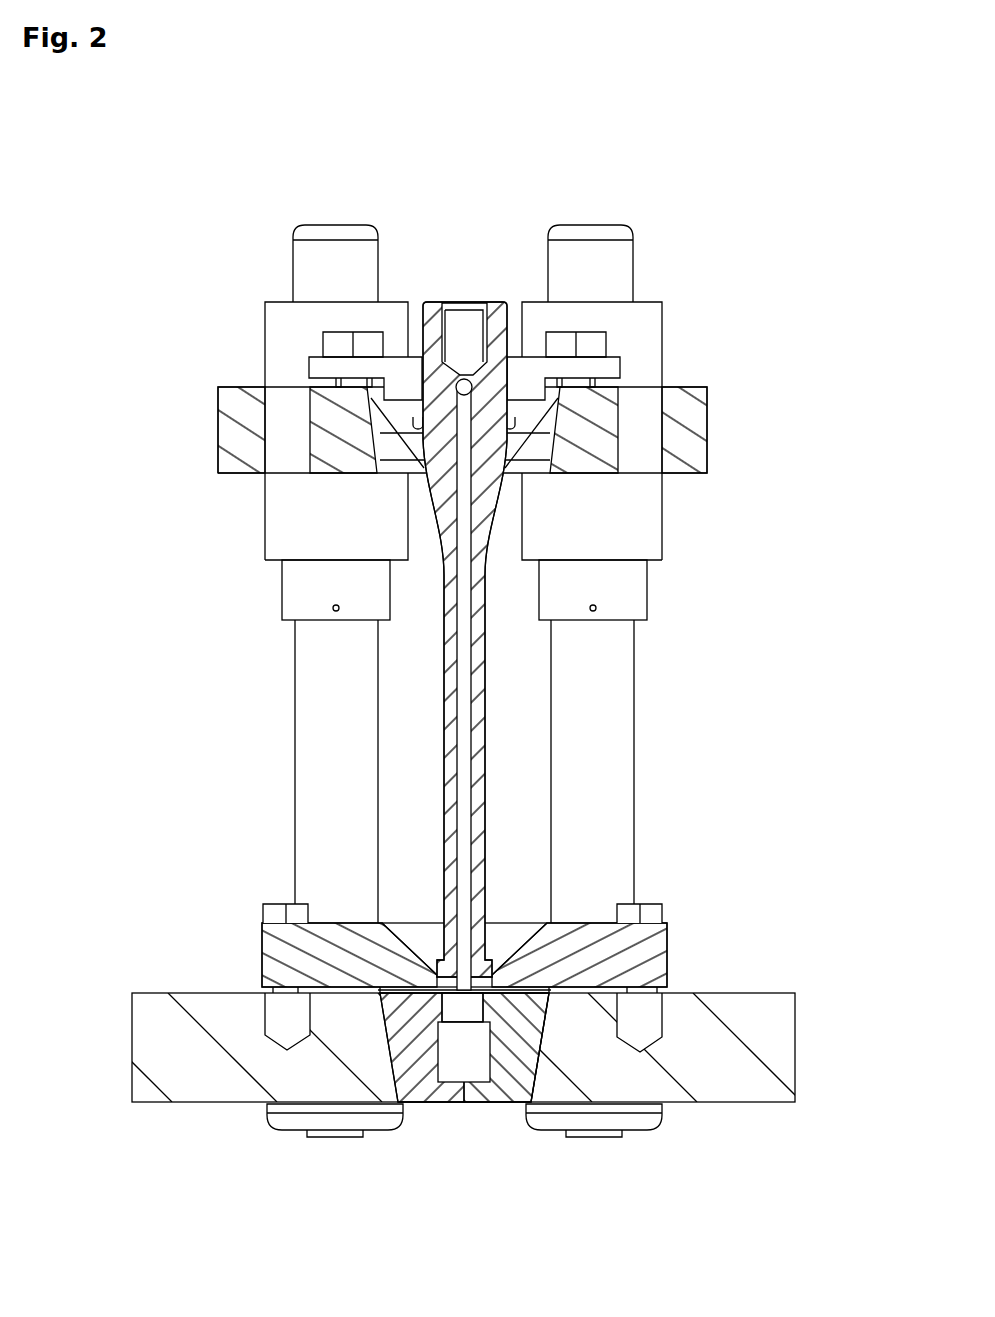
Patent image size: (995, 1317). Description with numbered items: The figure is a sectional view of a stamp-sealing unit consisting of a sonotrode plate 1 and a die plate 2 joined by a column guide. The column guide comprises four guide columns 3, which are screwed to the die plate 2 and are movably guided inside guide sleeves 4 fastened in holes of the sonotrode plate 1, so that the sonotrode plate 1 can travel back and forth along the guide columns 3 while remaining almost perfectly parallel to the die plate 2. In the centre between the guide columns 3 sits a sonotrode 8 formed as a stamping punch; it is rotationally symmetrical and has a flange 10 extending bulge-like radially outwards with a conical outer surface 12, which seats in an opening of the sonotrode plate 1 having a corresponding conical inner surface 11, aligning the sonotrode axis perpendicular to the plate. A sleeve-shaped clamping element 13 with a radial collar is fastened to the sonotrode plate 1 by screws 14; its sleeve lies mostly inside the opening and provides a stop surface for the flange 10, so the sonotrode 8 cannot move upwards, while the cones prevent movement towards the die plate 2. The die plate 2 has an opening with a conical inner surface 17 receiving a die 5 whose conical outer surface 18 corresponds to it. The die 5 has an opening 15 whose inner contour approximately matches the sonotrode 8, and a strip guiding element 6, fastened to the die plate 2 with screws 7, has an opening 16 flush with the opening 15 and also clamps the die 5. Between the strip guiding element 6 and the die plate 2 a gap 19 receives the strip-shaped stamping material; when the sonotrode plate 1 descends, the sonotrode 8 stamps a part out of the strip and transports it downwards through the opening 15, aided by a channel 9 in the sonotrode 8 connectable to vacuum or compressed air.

The sonotrode plate 1 is at (698, 455).
The die plate 2 is at (797, 1037).
The guide columns 3 is at (298, 790).
The guide sleeves 4 is at (647, 352).
The die 5 is at (503, 1075).
The strip guiding element 6 is at (650, 938).
The screws 7 is at (272, 908).
The sonotrode 8 is at (484, 664).
The channel 9 is at (462, 752).
The flange 10 is at (543, 408).
The conical inner surface 11 is at (380, 443).
The conical outer surface 12 is at (362, 424).
The clamping element 13 is at (375, 368).
The screws 14 is at (335, 343).
The opening 15 is at (452, 1053).
The opening 16 is at (503, 933).
The conical inner surface 17 is at (437, 982).
The conical outer surface 18 is at (540, 1050).
The gap 19 is at (437, 979).